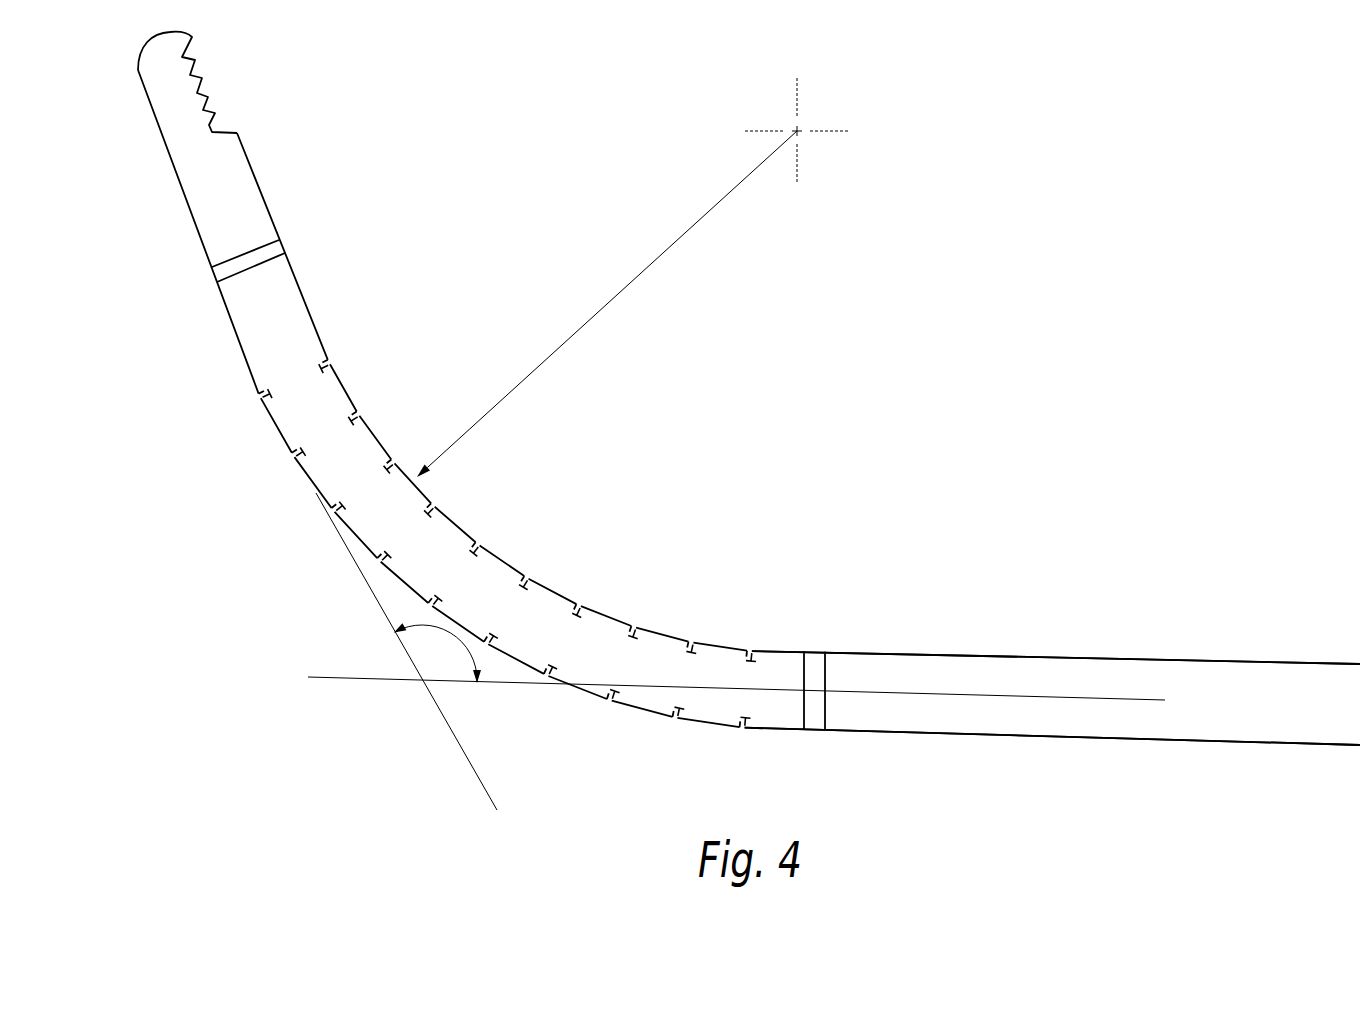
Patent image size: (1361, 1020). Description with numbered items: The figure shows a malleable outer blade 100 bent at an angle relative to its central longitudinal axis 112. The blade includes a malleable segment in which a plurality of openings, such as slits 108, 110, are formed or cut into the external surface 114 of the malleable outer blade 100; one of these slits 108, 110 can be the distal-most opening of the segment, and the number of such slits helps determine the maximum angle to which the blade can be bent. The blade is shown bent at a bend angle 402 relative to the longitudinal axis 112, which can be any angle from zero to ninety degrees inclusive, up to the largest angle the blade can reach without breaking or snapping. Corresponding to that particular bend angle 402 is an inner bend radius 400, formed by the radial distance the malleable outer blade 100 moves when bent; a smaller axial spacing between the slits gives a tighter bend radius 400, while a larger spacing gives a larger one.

The malleable outer blade 100 is at (1114, 657).
The slit 108 is at (258, 402).
The slit 110 is at (333, 362).
The longitudinal axis 112 is at (328, 676).
The external surface 114 is at (307, 298).
The inner bend radius 400 is at (608, 300).
The bend angle 402 is at (452, 638).